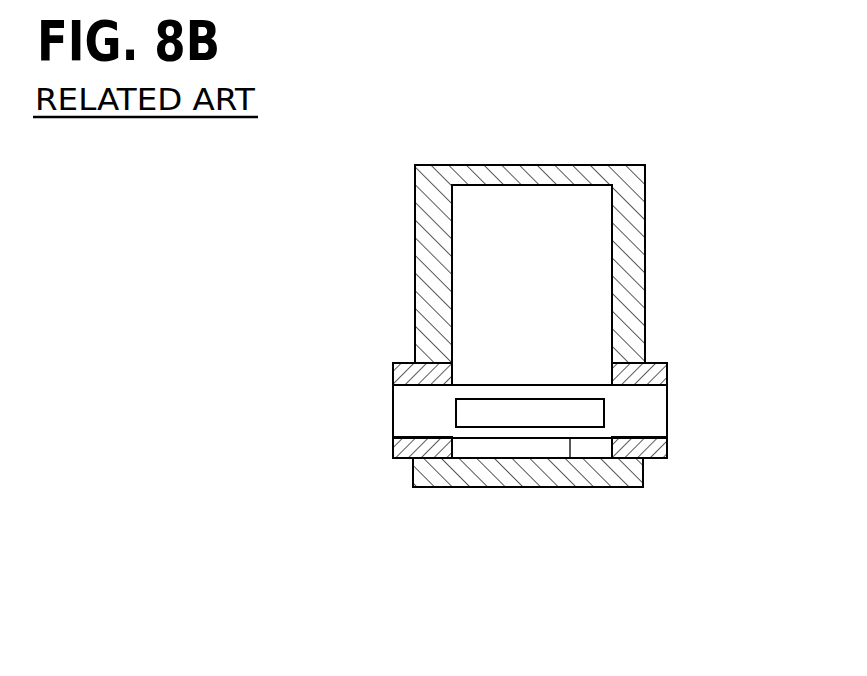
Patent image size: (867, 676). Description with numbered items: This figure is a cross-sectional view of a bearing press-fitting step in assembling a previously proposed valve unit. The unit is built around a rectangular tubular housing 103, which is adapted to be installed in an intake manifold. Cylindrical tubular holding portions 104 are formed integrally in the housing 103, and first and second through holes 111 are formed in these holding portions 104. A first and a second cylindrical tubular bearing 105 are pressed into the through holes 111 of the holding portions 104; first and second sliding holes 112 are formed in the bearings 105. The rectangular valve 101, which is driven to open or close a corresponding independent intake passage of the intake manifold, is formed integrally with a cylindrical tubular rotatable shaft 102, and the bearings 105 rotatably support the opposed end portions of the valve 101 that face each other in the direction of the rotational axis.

The valve 101 is at (500, 427).
The rotatable shaft 102 is at (575, 482).
The housing 103 is at (527, 168).
The holding portion 104 is at (428, 355).
The bearing 105 is at (395, 372).
The through hole 111 is at (425, 387).
The sliding hole 112 is at (422, 388).